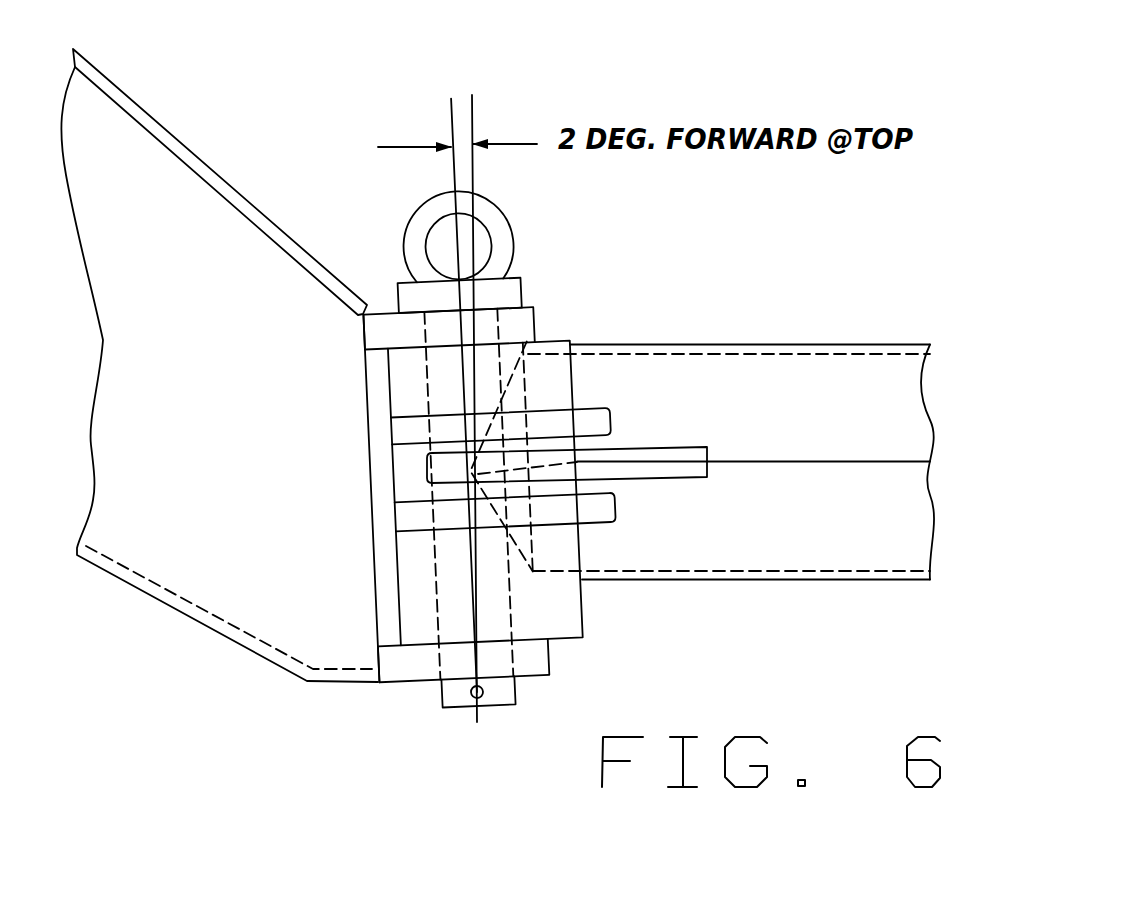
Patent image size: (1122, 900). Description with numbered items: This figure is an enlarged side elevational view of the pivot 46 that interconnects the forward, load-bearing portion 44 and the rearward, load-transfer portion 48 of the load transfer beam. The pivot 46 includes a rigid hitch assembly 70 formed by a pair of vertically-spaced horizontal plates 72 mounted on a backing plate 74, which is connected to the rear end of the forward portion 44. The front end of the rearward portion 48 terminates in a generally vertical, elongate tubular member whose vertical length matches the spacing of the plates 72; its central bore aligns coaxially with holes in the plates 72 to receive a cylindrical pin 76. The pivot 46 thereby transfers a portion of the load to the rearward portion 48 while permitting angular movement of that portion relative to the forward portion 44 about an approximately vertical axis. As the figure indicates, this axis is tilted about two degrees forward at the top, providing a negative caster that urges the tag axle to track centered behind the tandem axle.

The forward load-bearing portion 44 is at (219, 348).
The pivot 46 is at (543, 463).
The rearward load-transfer portion 48 is at (680, 408).
The hitch assembly 70 is at (463, 395).
The horizontal plates 72 is at (396, 536).
The backing plate 74 is at (333, 500).
The cylindrical pin 76 is at (502, 245).